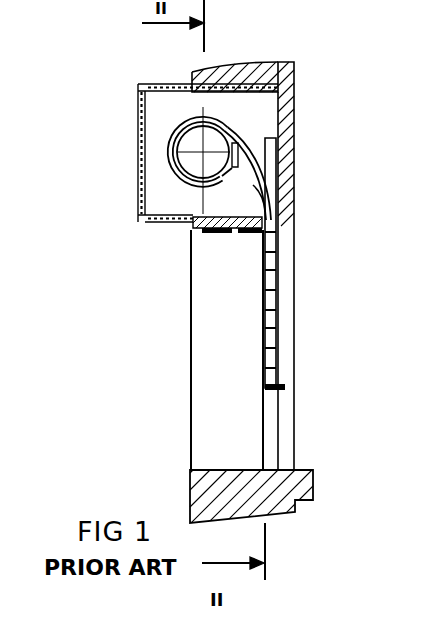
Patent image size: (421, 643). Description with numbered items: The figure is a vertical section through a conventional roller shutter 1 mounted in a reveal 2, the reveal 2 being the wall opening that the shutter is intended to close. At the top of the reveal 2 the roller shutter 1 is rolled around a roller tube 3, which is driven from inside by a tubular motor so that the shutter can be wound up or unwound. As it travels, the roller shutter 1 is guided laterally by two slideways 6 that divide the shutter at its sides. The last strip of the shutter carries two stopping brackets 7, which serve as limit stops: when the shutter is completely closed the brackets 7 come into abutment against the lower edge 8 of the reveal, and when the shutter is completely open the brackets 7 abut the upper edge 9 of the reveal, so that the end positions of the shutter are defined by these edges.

The roller shutter 1 is at (282, 288).
The reveal 2 is at (210, 347).
The roller tube 3 is at (188, 145).
The slideways 6 is at (268, 432).
The stopping brackets 7 is at (286, 384).
The lower edge 8 is at (286, 468).
The upper edge 9 is at (282, 232).